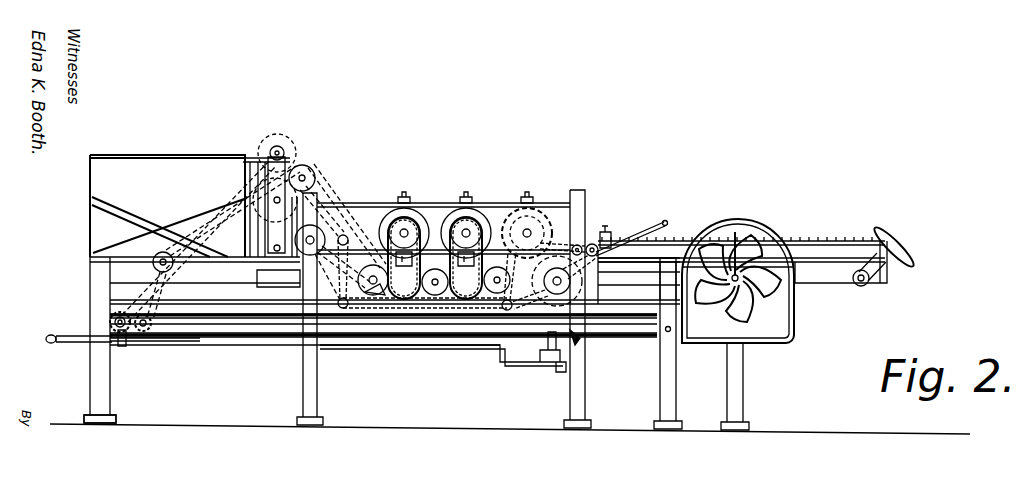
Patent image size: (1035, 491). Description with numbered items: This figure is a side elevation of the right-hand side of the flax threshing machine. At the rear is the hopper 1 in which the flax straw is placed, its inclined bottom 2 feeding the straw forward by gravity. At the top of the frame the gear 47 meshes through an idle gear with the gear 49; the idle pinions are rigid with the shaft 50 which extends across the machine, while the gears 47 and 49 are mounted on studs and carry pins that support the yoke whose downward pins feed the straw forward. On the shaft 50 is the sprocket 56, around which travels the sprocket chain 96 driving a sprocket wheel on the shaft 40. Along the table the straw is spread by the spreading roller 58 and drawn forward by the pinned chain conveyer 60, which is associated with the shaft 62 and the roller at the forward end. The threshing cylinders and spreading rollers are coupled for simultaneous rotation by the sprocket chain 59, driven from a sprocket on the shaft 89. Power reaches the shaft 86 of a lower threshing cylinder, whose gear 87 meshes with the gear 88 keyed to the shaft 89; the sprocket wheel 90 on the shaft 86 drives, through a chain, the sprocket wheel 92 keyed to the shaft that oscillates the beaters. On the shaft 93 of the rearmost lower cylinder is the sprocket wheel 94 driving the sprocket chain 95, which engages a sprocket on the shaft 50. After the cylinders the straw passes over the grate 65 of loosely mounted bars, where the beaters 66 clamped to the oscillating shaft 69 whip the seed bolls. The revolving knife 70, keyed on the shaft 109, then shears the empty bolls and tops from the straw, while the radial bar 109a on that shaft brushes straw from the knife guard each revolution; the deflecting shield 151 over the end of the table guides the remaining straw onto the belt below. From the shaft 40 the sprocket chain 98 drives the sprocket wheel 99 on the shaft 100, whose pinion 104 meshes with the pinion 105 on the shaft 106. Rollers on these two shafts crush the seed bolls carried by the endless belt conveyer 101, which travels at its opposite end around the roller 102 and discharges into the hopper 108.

The hopper 1 is at (105, 178).
The inclined bottom 2 is at (95, 214).
The shaft 40 is at (165, 252).
The gear 47 is at (282, 145).
The gear 49 is at (257, 200).
The shaft 50 is at (313, 176).
The sprocket 56 is at (306, 167).
The spreading roller 58 is at (347, 212).
The sprocket chain 59 is at (307, 272).
The chain conveyer 60 is at (808, 243).
The shaft 62 is at (278, 278).
The grate 65 is at (611, 237).
The beater 66 is at (665, 221).
The shaft 69 is at (593, 243).
The revolving knife 70 is at (753, 241).
The shaft 86 is at (556, 294).
The gear 87 is at (572, 287).
The gear 88 is at (548, 226).
The shaft 89 is at (535, 230).
The sprocket wheel 90 is at (535, 322).
The sprocket wheel 92 is at (607, 254).
The shaft 93 is at (373, 293).
The sprocket wheel 94 is at (380, 292).
The sprocket chain 95 is at (332, 198).
The sprocket chain 96 is at (220, 216).
The sprocket chain 98 is at (160, 296).
The sprocket wheel 99 is at (122, 336).
The shaft 100 is at (110, 322).
The endless belt conveyer 101 is at (283, 344).
The roller 102 is at (667, 331).
The pinion 104 is at (118, 327).
The pinion 105 is at (146, 335).
The shaft 106 is at (152, 340).
The hopper 108 is at (113, 393).
The shaft 109 is at (745, 282).
The bar 109a is at (735, 232).
The deflecting shield 151 is at (893, 244).